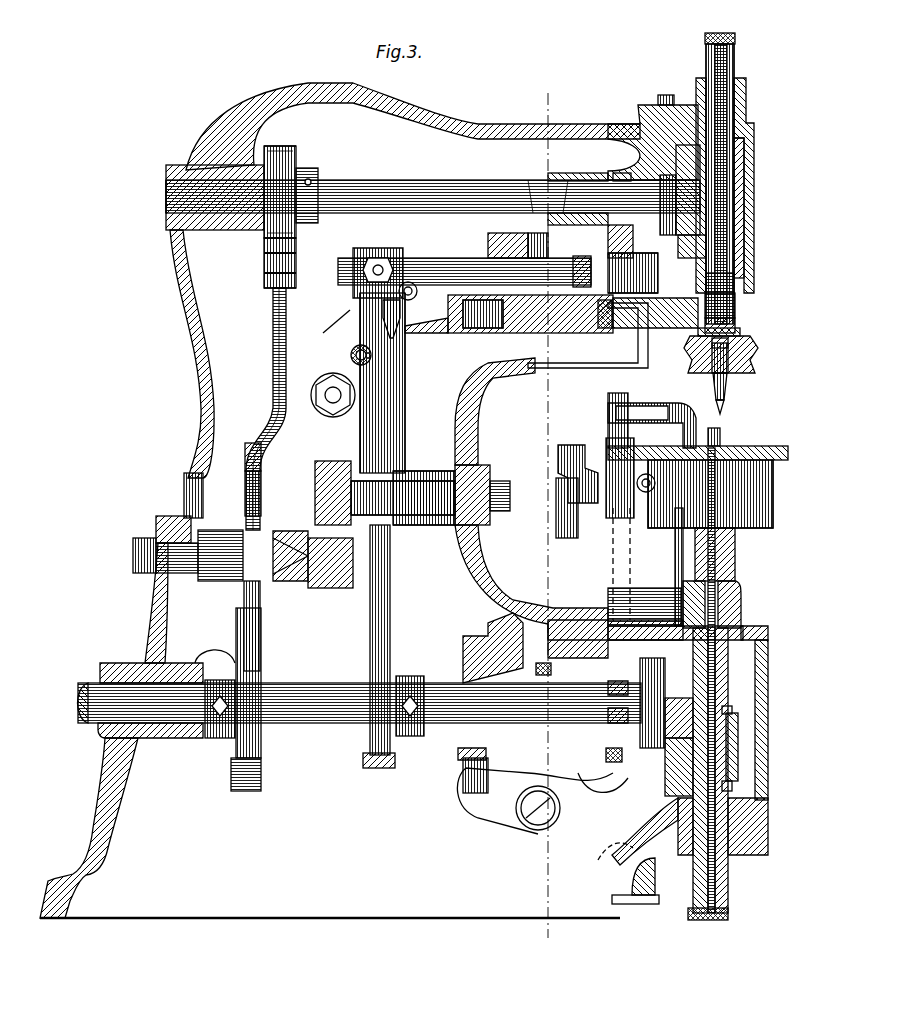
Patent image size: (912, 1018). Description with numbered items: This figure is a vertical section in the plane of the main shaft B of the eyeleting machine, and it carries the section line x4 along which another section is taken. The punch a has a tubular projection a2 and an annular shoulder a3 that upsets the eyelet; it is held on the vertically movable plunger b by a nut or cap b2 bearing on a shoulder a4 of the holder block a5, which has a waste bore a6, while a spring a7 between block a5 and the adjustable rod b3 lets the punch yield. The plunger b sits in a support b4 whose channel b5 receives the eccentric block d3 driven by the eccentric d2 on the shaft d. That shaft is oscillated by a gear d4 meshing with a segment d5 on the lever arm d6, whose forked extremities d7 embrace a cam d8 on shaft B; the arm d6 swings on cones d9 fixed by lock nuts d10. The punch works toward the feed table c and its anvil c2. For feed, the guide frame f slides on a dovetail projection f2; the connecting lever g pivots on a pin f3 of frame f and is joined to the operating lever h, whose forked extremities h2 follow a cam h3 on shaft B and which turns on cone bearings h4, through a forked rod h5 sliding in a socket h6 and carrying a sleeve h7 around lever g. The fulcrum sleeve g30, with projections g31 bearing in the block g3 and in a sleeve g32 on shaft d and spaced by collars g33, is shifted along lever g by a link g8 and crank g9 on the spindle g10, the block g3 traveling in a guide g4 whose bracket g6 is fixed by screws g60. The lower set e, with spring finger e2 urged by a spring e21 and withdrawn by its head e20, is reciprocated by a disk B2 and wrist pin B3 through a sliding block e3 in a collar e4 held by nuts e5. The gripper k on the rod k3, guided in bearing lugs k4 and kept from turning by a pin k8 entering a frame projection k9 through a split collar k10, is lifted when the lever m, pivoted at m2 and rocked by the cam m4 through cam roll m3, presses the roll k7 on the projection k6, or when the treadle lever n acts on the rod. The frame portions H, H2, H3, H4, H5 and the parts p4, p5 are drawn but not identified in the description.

The frame H is at (200, 385).
The frame bearing H2 is at (320, 580).
The frame housing wall H3 is at (748, 625).
The frame housing outer wall H4 is at (760, 660).
The frame bearing H5 is at (185, 490).
The shaft d is at (405, 183).
The eccentric d2 is at (692, 188).
The eccentric-block d3 is at (700, 165).
The gear d4 is at (297, 168).
The segment d5 is at (258, 257).
The lever-arm d6 is at (266, 330).
The forked extremities d7 is at (252, 665).
The cam d8 is at (250, 785).
The cones d9 is at (205, 575).
The lock-nuts d10 is at (135, 565).
The connecting-lever g is at (430, 252).
The block g3 is at (560, 360).
The guide g4 is at (480, 325).
The support or bracket g6 is at (590, 325).
The link g8 is at (410, 283).
The crank g9 is at (343, 347).
The rock-shaft or spindle g10 is at (310, 400).
The sleeve g30 is at (482, 236).
The projections g31 is at (528, 157).
The sleeve g32 is at (560, 165).
The nuts or threaded collars g33 is at (595, 240).
The screws g60 is at (420, 318).
The operating-lever h is at (380, 518).
The forked extremities h2 is at (382, 640).
The cam h3 is at (372, 762).
The cone-bearings h4 is at (495, 505).
The intermediate member h5 is at (372, 310).
The socket h6 is at (397, 420).
The sleeve h7 is at (370, 240).
The section line x4 is at (544, 503).
The punch a is at (702, 382).
The tubular projection a2 is at (715, 400).
The annular shoulder a3 is at (719, 380).
The shoulder a4 is at (722, 360).
The block a5 is at (727, 318).
The tubular opening or bore a6 is at (732, 326).
The spring a7 is at (727, 295).
The plunger b is at (726, 265).
The nut or cap b2 is at (752, 352).
The adjustable rod b3 is at (727, 33).
The support b4 is at (736, 235).
The channel b5 is at (640, 120).
The guide-frame f is at (741, 110).
The dovetail projection f2 is at (660, 87).
The pin or projection f3 is at (665, 320).
The feed-table c is at (780, 445).
The anvil c2 is at (720, 460).
The lower set e is at (727, 540).
The spring-finger e2 is at (715, 505).
The sliding block e3 is at (670, 697).
The collar e4 is at (730, 730).
The nuts e5 is at (724, 702).
The head e20 is at (700, 912).
The spring e21 is at (720, 600).
The gripper k is at (652, 420).
The rod k3 is at (620, 495).
The bearing-lugs k4 is at (585, 860).
The projection k6 is at (595, 745).
The roll k7 is at (596, 762).
The pin k8 is at (552, 460).
The projection k9 is at (572, 500).
The split collar k10 is at (628, 485).
The lever m is at (535, 801).
The pivot m2 is at (530, 822).
The cam-roll m3 is at (470, 785).
The cam m4 is at (450, 750).
The lever n is at (647, 870).
The pawl p4 is at (495, 625).
The pawl pin p5 is at (535, 667).
The main shaft B is at (310, 720).
The disk B2 is at (620, 660).
The wrist-pin B3 is at (660, 775).